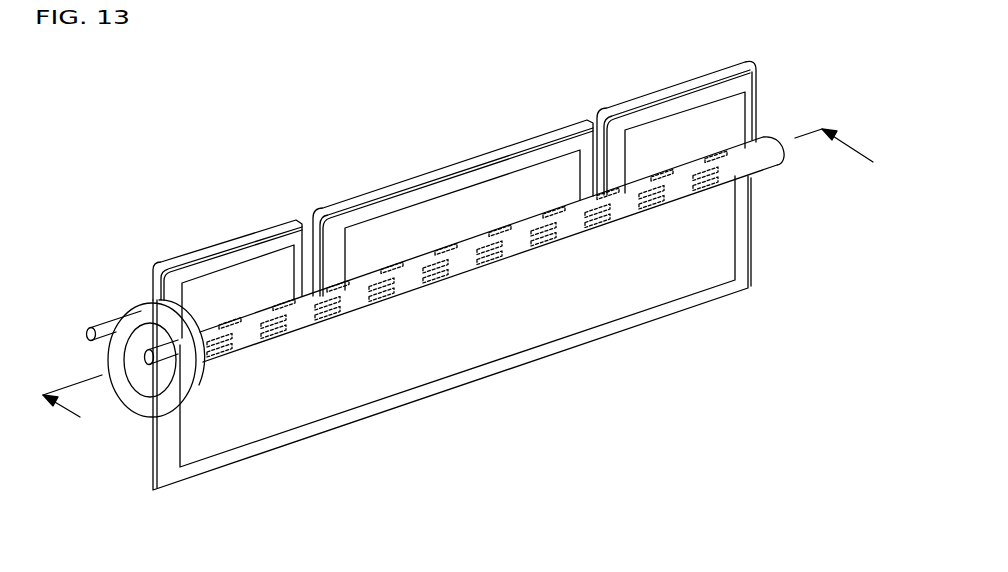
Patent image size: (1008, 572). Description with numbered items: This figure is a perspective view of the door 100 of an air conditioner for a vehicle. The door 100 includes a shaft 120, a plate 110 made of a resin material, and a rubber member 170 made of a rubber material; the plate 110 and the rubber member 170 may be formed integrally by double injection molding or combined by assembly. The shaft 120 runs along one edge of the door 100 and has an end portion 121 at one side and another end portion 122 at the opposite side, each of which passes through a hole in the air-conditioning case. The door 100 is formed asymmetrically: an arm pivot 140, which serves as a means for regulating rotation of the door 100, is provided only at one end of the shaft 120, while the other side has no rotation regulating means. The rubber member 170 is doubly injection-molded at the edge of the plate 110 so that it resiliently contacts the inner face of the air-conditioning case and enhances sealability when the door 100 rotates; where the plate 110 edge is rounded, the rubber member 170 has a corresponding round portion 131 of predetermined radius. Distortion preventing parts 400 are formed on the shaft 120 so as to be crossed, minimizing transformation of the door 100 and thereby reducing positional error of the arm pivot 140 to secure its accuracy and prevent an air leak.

The door 100 is at (169, 151).
The plate 110 is at (400, 207).
The shaft 120 is at (365, 282).
The end portion 121 is at (150, 366).
The other end portion 122 is at (785, 157).
The round portion 131 is at (748, 288).
The arm pivot 140 is at (104, 326).
The rubber member 170 is at (482, 177).
The distortion preventing parts 400 is at (264, 312).